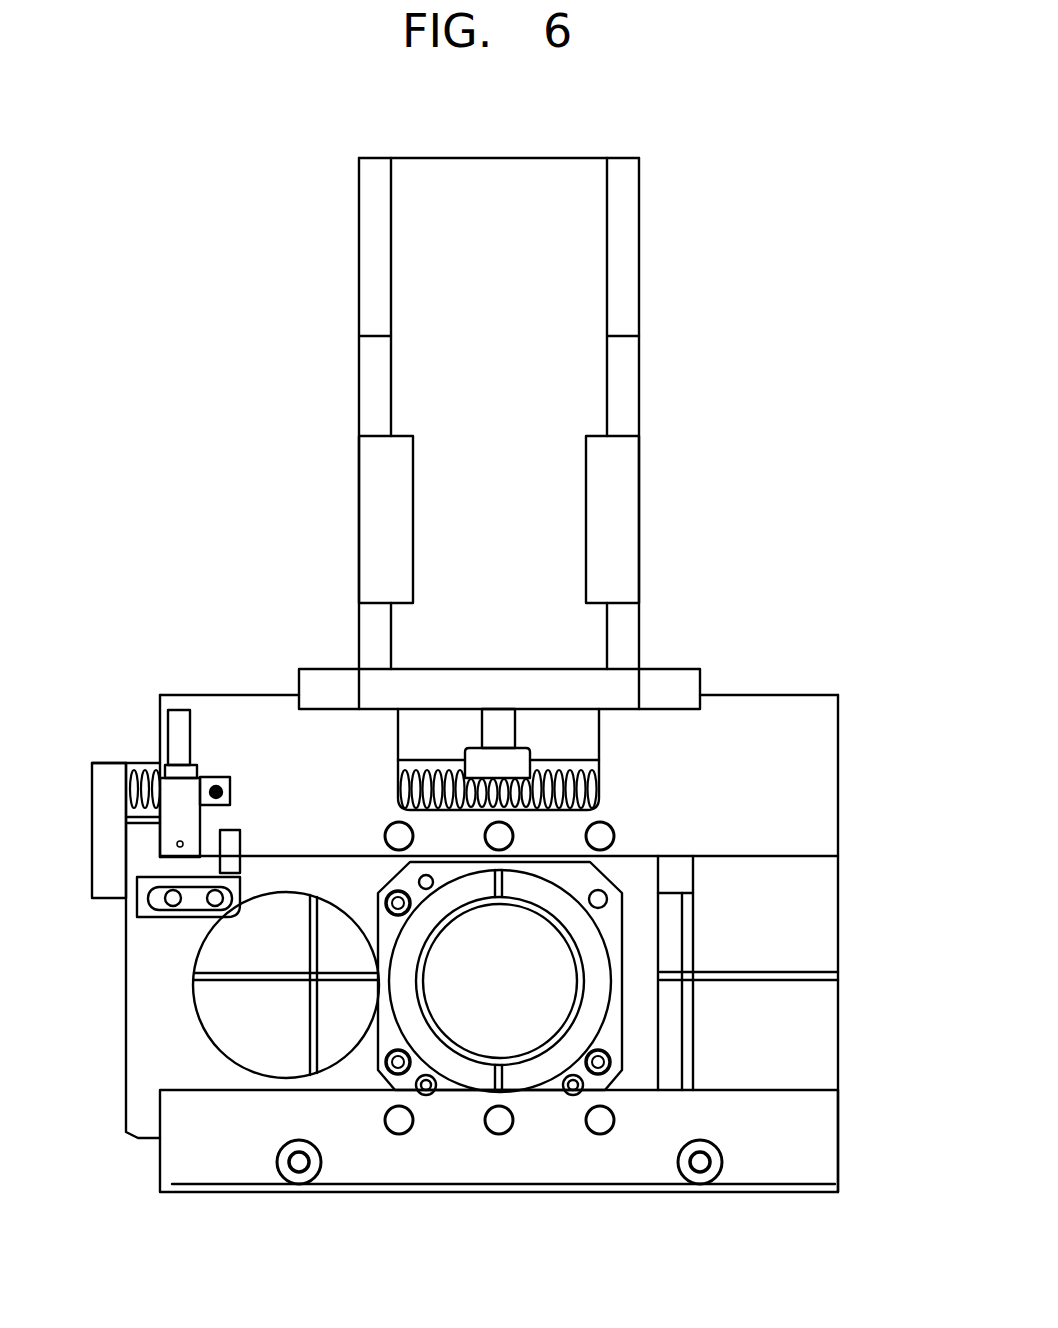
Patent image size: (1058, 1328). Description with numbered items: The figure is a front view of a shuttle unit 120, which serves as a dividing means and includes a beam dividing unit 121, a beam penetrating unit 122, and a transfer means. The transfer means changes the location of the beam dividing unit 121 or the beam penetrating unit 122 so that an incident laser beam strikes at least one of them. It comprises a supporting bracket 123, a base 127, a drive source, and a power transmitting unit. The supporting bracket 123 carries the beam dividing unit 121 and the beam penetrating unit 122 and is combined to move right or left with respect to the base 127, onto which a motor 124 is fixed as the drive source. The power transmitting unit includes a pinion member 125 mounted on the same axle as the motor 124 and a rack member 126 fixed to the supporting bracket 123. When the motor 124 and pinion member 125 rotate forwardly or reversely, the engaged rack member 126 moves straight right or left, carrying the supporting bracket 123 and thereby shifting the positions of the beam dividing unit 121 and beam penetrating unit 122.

The shuttle unit 120 is at (252, 275).
The beam dividing unit 121 is at (523, 1013).
The beam penetrating unit 122 is at (263, 1025).
The supporting bracket 123 is at (155, 1004).
The motor 124 is at (542, 253).
The pinion member 125 is at (535, 770).
The rack member 126 is at (410, 768).
The base 127 is at (805, 802).